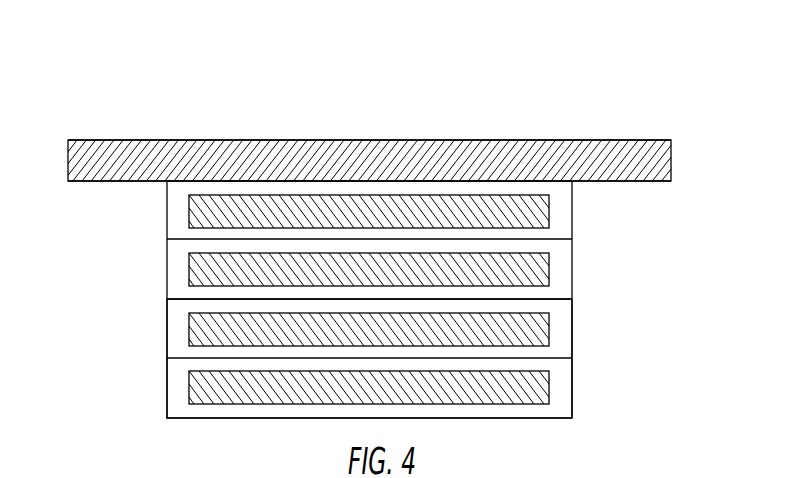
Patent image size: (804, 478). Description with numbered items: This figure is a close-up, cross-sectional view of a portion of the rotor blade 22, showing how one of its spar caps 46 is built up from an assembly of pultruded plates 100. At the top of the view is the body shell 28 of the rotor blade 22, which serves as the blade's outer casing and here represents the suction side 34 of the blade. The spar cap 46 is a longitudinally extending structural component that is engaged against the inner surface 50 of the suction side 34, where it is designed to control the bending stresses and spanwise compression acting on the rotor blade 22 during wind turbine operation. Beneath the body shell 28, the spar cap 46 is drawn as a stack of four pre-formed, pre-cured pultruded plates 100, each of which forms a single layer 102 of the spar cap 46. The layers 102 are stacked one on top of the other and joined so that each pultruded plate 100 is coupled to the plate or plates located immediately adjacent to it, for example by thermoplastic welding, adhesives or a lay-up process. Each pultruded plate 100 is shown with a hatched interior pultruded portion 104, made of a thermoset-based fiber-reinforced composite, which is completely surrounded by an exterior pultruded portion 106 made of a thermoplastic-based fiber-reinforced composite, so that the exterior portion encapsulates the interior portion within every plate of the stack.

The rotor blade 22 is at (516, 92).
The body shell 28 is at (99, 134).
The suction side 34 is at (200, 140).
The inner surface of the suction side 50 is at (89, 182).
The spar cap 46 is at (701, 279).
The pultruded plate 100 is at (162, 280).
The layer 102 is at (592, 238).
The interior pultruded portion 104 is at (546, 398).
The exterior pultruded portion 106 is at (566, 310).